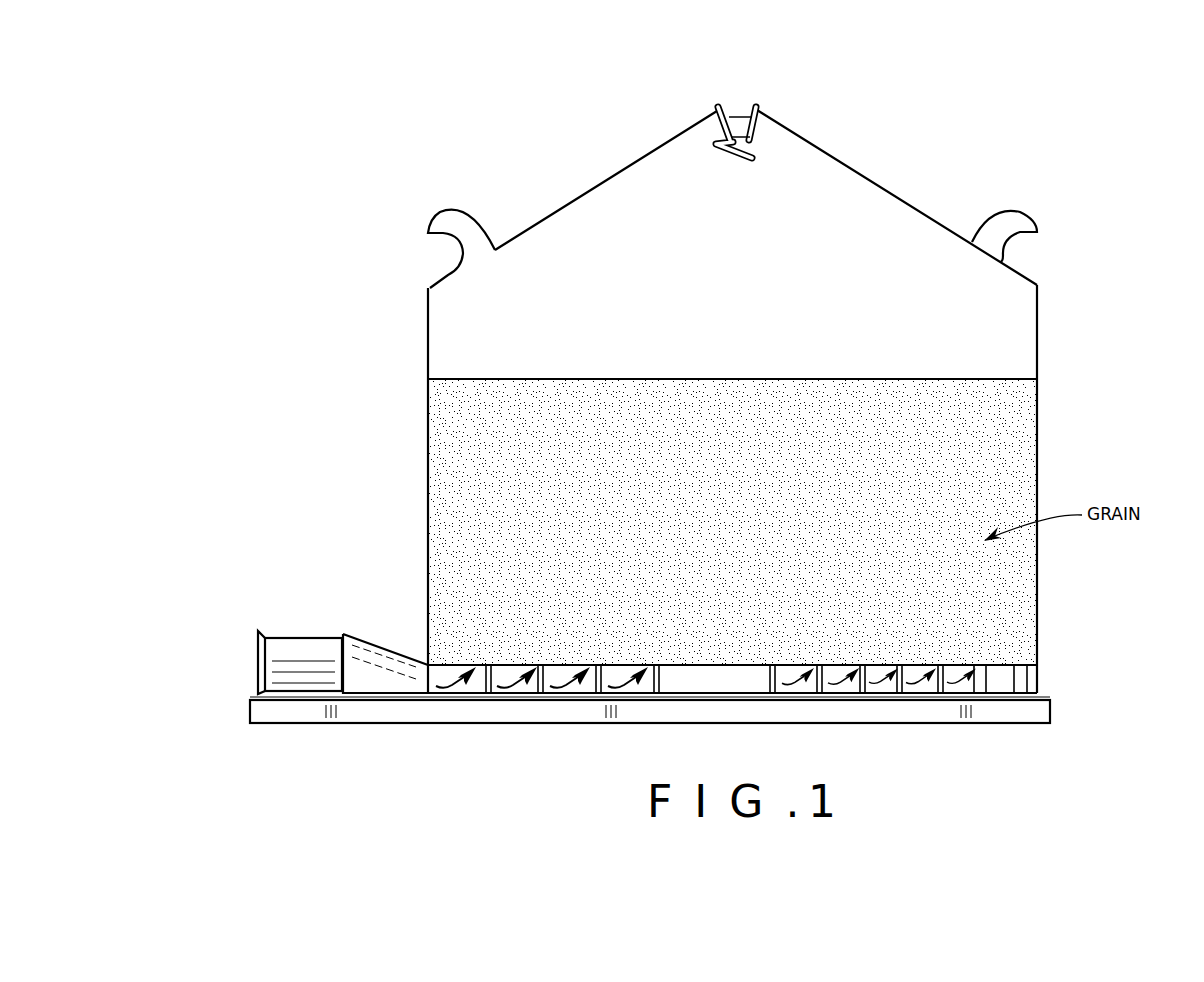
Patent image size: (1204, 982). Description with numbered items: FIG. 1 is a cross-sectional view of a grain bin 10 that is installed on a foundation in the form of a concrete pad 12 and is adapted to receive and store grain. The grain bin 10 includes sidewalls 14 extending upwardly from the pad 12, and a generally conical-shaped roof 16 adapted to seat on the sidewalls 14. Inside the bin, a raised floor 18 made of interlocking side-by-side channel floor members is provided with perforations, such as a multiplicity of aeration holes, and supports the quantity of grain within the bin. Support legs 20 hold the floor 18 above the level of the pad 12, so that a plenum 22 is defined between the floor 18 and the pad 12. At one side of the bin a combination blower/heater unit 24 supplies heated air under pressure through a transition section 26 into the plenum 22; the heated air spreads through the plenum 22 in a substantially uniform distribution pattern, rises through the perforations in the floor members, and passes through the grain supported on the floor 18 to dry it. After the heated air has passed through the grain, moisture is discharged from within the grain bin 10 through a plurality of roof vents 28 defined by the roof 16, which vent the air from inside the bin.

The grain bin 10 is at (907, 170).
The concrete pad 12 is at (834, 709).
The sidewalls 14 is at (1040, 356).
The roof 16 is at (818, 148).
The raised floor 18 is at (997, 660).
The support legs 20 is at (603, 690).
The plenum 22 is at (950, 688).
The blower/heater unit 24 is at (298, 652).
The transition section 26 is at (387, 673).
The roof vents 28 is at (1015, 208).